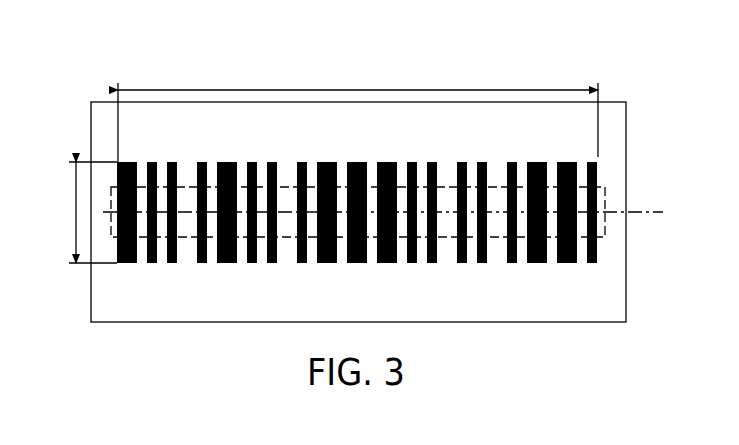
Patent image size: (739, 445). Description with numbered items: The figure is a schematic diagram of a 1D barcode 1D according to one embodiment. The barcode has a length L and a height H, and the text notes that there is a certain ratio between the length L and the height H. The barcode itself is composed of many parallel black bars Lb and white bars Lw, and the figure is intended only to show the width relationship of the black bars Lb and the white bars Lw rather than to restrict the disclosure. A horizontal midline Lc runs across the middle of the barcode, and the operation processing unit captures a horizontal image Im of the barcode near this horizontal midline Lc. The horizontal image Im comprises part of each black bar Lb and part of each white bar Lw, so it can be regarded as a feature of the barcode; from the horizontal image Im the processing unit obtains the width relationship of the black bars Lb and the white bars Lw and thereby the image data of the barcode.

The 1D barcode 1D is at (78, 62).
The length L is at (358, 111).
The height H is at (85, 212).
The black bars Lb is at (253, 153).
The white bars Lw is at (291, 153).
The horizontal image Im is at (606, 199).
The horizontal midline Lc is at (647, 214).